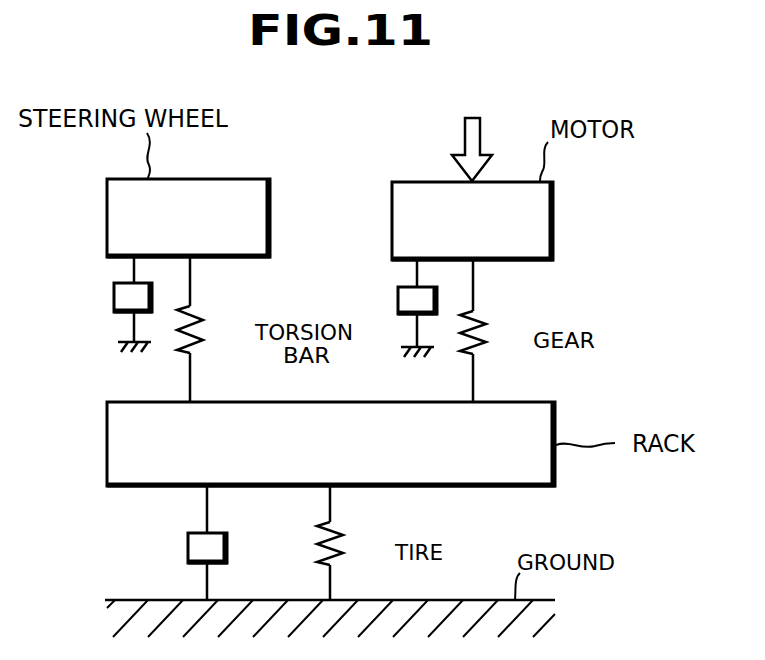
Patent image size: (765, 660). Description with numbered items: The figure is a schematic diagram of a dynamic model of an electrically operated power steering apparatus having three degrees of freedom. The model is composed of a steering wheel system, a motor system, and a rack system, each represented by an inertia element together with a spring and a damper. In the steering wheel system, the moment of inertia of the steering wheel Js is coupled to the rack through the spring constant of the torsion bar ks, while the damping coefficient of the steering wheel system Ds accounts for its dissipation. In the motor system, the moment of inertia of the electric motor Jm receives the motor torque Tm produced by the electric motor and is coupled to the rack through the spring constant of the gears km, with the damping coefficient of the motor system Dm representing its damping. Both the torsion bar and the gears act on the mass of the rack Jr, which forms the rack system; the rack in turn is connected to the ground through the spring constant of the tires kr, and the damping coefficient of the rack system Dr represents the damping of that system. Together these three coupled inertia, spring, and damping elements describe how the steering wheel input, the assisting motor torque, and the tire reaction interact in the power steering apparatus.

The moment of inertia of the steering wheel Js is at (188, 218).
The moment of inertia of the electric motor Jm is at (472, 221).
The mass of the rack Jr is at (331, 444).
The damping coefficient of the steering wheel system Ds is at (113, 296).
The damping coefficient of the motor system Dm is at (397, 300).
The damping coefficient of the rack system Dr is at (187, 548).
The spring constant of the torsion bar ks is at (200, 333).
The spring constant of the gears km is at (488, 333).
The spring constant of the tires kr is at (343, 545).
The motor torque Tm is at (472, 133).